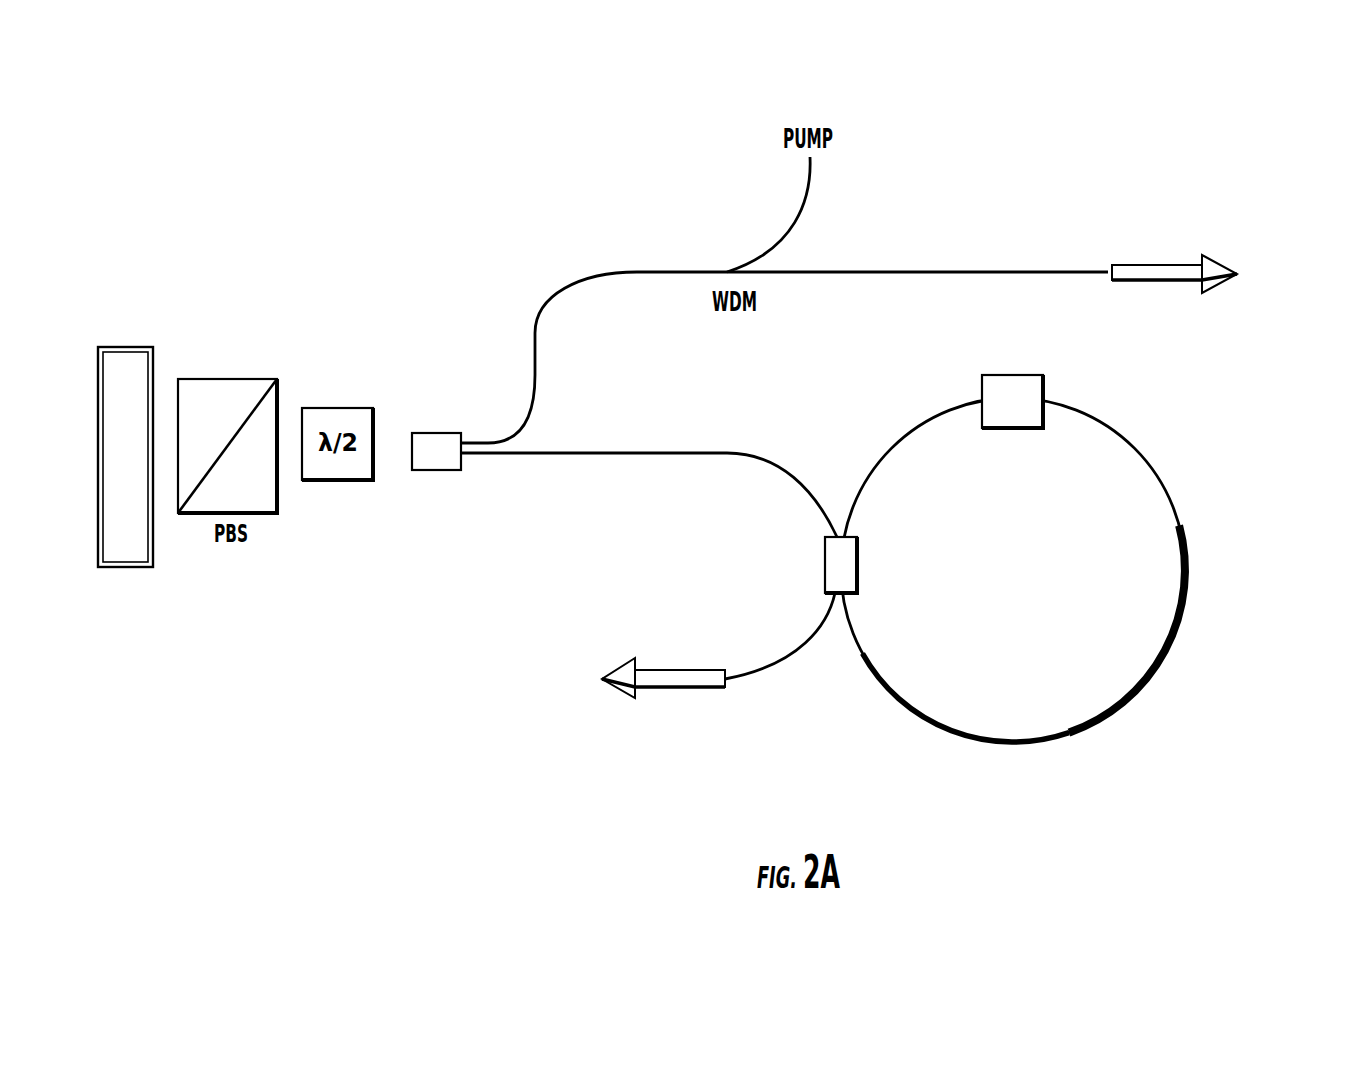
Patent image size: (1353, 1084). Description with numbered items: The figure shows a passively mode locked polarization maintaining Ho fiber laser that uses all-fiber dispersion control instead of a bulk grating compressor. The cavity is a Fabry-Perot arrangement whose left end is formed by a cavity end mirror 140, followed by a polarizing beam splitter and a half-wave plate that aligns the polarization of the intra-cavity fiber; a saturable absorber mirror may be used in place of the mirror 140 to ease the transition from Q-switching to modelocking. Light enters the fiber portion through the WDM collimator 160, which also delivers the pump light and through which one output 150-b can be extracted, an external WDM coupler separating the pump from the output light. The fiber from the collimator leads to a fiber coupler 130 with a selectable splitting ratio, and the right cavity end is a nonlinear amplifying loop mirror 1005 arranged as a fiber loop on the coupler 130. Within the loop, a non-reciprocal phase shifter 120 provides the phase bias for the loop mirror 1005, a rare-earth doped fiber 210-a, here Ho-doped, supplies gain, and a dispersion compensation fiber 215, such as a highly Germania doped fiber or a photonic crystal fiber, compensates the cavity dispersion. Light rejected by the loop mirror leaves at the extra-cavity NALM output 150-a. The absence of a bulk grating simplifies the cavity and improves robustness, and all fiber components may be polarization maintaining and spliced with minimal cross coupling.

The cavity end mirror 140 is at (153, 553).
The WDM collimator 160 is at (445, 418).
The fiber coupler 130 is at (823, 560).
The non-reciprocal phase shifter 120 is at (1020, 375).
The nonlinear amplifying loop mirror 1005 is at (1212, 617).
The rare-earth doped fiber 210-a is at (958, 737).
The dispersion compensation fiber 215 is at (1125, 708).
The extra-cavity NALM output 150-a is at (600, 703).
The output 150-b is at (1215, 238).